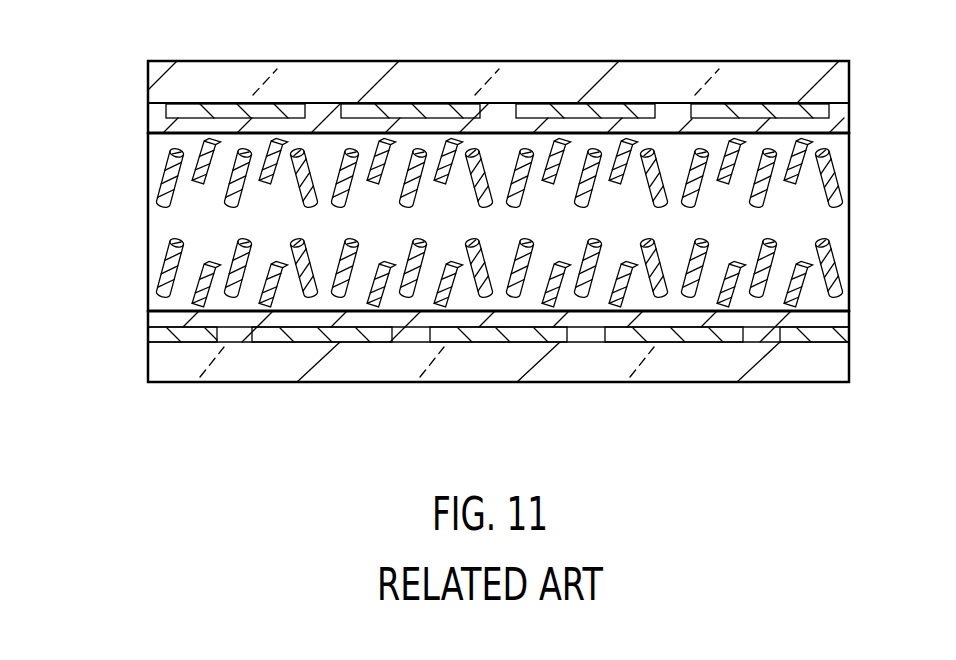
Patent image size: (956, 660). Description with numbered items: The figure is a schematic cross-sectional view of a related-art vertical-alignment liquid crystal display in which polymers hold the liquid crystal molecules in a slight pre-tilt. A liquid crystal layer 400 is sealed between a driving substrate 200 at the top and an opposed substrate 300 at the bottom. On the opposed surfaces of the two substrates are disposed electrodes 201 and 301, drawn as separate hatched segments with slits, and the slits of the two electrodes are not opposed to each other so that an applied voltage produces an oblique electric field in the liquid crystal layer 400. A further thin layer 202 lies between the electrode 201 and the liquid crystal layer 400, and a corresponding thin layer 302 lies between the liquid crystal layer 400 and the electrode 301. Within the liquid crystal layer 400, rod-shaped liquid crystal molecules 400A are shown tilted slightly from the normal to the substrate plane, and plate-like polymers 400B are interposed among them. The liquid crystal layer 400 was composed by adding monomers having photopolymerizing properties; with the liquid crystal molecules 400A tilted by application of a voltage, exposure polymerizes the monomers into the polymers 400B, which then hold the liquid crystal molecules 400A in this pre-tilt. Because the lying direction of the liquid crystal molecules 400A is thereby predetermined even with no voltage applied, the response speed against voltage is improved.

The driving substrate 200 is at (153, 80).
The electrode 201 is at (166, 111).
The upper alignment layer 202 is at (160, 126).
The liquid crystal layer 400 is at (453, 293).
The liquid crystal molecules 400A is at (308, 292).
The polymers 400B is at (205, 306).
The lower alignment layer 302 is at (158, 321).
The electrode 301 is at (162, 333).
The opposed substrate 300 is at (155, 368).